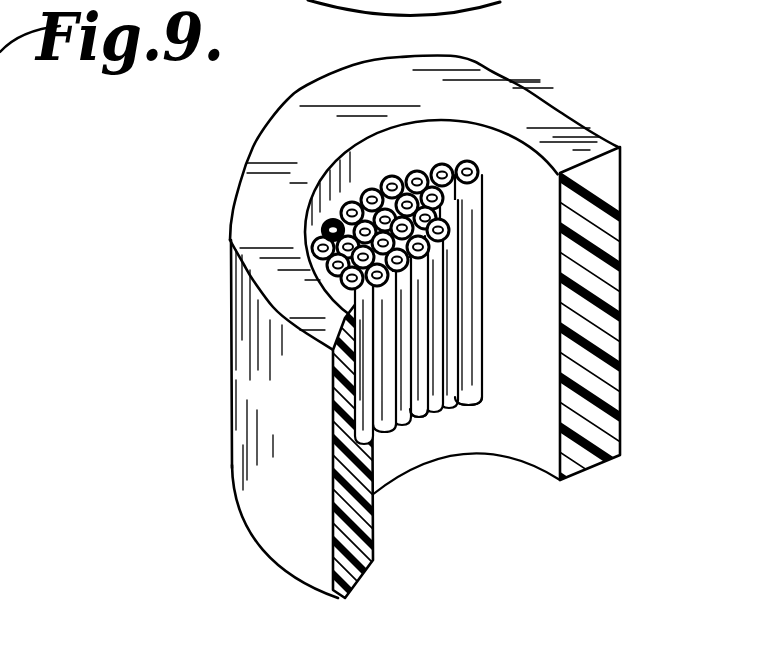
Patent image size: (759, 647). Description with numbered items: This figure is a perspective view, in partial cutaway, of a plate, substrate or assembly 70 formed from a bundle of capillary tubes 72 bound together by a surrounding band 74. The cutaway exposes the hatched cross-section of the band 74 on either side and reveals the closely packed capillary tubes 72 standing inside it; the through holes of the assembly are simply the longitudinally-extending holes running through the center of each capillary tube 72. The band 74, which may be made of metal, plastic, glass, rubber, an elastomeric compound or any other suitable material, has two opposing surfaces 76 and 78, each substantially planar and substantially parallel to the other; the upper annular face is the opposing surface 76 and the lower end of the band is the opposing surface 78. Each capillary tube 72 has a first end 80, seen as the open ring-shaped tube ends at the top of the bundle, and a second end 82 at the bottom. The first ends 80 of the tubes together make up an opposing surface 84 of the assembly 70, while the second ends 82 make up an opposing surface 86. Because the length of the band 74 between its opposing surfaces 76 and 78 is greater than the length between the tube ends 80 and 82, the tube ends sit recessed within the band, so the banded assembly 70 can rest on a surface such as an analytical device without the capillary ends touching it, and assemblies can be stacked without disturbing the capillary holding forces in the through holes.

The assembly 70 is at (470, 293).
The capillary tubes 72 is at (443, 253).
The band 74 is at (582, 118).
The opposing surface 76 is at (282, 144).
The opposing surface 78 is at (250, 528).
The first end 80 is at (372, 197).
The second end 82 is at (473, 407).
The opposing surface 84 is at (326, 222).
The opposing surface 86 is at (412, 418).